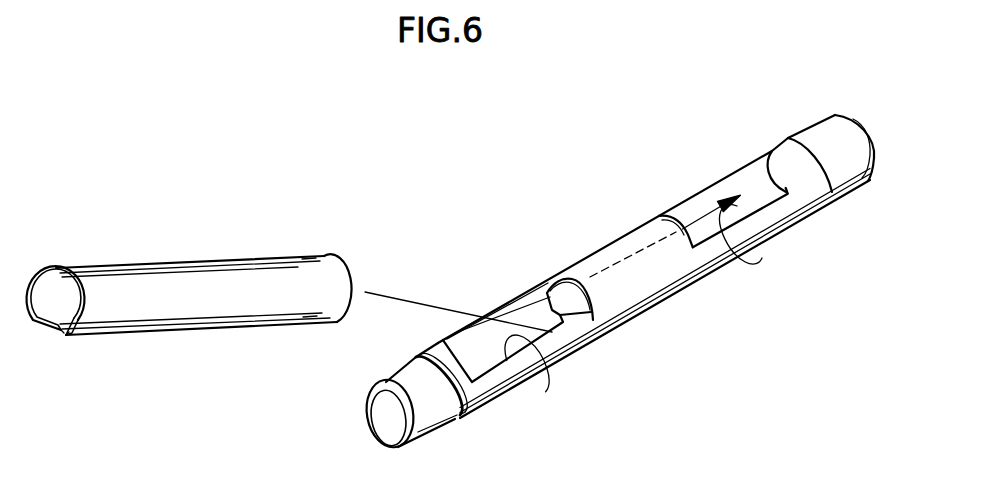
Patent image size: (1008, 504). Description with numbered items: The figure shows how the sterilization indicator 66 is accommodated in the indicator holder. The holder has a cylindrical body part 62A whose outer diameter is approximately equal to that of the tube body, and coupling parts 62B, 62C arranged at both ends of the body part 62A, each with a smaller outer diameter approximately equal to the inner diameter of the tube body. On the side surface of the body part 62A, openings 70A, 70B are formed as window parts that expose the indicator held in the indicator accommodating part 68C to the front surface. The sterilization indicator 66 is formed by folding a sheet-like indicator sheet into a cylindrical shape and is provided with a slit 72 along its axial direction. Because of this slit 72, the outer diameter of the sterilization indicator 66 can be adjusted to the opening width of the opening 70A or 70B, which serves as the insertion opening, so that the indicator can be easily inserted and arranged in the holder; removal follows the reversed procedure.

The body part 62A is at (592, 257).
The coupling part 62B is at (425, 431).
The second end portion 62C is at (855, 183).
The sterilization indicator 66 is at (187, 268).
The engaging portion 68C is at (693, 218).
The opening 70A is at (529, 371).
The opening 70B is at (736, 206).
The slit 72 is at (49, 339).